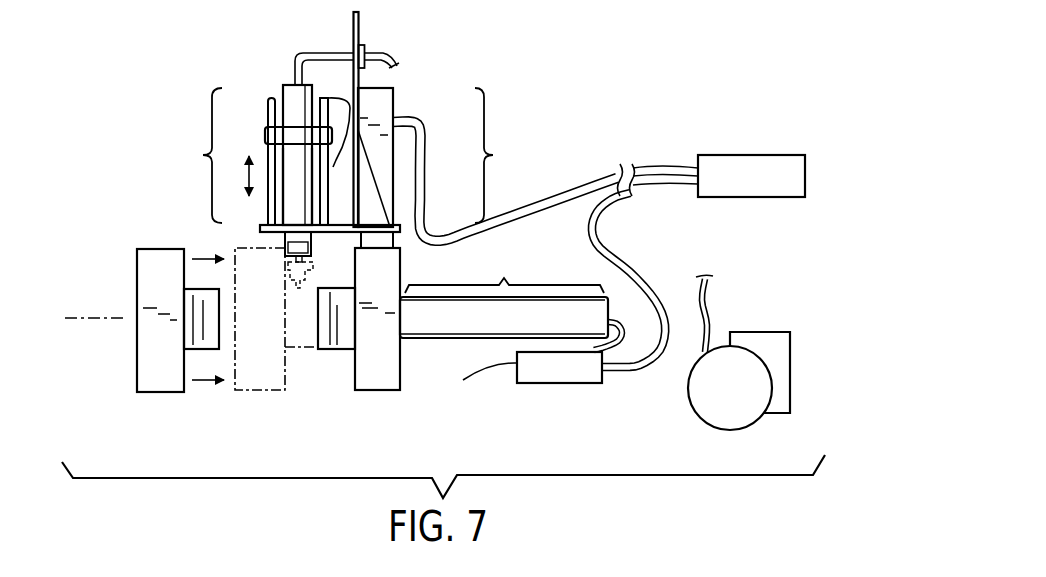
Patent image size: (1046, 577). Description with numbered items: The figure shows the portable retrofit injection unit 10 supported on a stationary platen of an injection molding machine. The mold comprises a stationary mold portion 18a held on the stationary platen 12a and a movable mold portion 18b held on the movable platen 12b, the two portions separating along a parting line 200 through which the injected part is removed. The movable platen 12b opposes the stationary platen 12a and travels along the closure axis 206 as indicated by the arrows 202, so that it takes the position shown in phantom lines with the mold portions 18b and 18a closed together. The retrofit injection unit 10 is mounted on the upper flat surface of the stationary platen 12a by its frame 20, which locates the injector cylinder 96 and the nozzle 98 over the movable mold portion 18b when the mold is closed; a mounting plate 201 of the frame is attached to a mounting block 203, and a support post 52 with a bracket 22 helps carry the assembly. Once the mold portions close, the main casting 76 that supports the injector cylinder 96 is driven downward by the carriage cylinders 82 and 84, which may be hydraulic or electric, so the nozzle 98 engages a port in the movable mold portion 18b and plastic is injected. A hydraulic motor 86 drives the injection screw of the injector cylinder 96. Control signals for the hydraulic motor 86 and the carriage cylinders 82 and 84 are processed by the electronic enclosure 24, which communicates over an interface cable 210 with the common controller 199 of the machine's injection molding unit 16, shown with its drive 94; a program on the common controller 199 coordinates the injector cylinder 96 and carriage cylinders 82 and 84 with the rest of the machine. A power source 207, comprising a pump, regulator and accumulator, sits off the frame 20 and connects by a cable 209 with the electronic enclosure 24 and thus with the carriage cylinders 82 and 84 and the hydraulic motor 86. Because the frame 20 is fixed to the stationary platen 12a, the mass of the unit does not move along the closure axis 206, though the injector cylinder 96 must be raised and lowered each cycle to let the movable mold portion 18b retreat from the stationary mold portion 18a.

The retrofit injection unit 10 is at (498, 155).
The stationary platen 12a is at (397, 367).
The movable platen 12b is at (138, 370).
The injection molding unit 16 is at (503, 281).
The stationary mold portion 18a is at (330, 347).
The movable mold portion 18b is at (190, 333).
The frame 20 is at (407, 229).
The dispensing assembly 22 is at (197, 155).
The electronic enclosure 24 is at (380, 109).
The support rod 52 is at (360, 27).
The main casting 76 is at (268, 135).
The carriage cylinder 82 is at (270, 97).
The carriage cylinder 84 is at (328, 97).
The hydraulic motor 86 is at (283, 85).
The motor 94 is at (510, 330).
The injector cylinder 96 is at (294, 203).
The nozzle 98 is at (295, 265).
The common controller 199 is at (769, 187).
The parting line 200 is at (318, 340).
The mounting plate 201 is at (381, 196).
The arrows 202 is at (203, 256).
The mounting block 203 is at (397, 238).
The closure axis 206 is at (101, 317).
The power source 207 is at (748, 397).
The cable 209 is at (713, 297).
The interface cable 210 is at (582, 188).